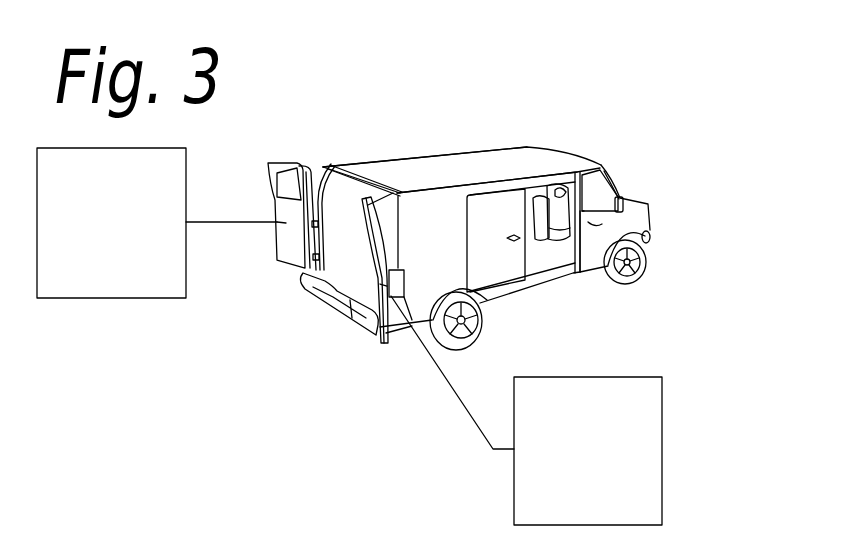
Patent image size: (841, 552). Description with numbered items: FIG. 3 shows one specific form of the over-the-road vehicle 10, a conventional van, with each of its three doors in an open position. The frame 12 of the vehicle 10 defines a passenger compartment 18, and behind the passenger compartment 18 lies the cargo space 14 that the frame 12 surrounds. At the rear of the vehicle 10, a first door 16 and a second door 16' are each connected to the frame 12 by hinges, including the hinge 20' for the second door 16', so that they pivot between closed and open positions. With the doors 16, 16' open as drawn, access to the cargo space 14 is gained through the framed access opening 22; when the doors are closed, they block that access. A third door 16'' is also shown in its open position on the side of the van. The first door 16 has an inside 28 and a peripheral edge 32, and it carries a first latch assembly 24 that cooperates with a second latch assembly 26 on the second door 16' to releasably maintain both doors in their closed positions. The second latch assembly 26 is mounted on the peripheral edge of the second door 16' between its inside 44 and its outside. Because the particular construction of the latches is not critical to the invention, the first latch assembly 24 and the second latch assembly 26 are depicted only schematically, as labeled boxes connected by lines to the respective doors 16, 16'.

The over-the-road vehicle 10 is at (603, 130).
The frame 12 is at (417, 162).
The cargo space 14 is at (480, 154).
The first door 16 is at (354, 311).
The second door 16' is at (284, 259).
The sliding side door 16'' is at (549, 263).
The passenger compartment 18 is at (607, 228).
The hinge 20' is at (357, 148).
The framed access opening 22 is at (348, 168).
The first latch assembly 24 is at (598, 506).
The second latch assembly 26 is at (120, 278).
The inside 28 is at (345, 300).
The peripheral edge 32 is at (395, 193).
The inside 44 is at (288, 233).